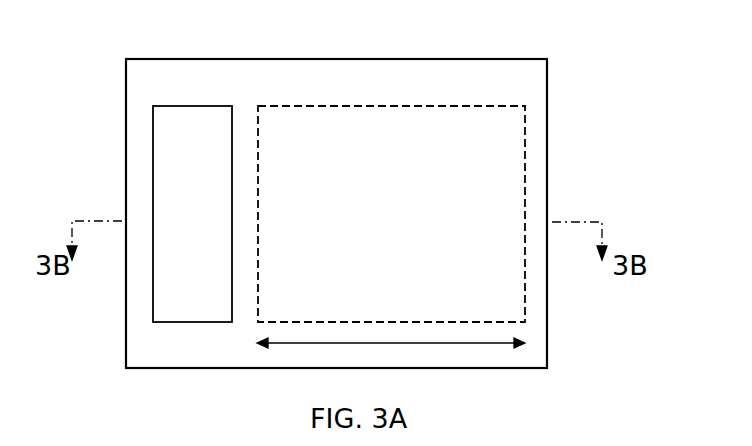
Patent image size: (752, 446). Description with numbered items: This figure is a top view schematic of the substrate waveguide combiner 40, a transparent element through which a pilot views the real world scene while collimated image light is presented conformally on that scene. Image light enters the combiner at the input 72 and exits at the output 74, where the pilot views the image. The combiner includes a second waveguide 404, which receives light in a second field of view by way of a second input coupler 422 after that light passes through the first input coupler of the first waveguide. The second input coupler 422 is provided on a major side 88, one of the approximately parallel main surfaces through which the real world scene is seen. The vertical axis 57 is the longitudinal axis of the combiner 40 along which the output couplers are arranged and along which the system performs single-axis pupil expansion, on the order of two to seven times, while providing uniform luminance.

The substrate waveguide combiner 40 is at (590, 83).
The major side 88 is at (258, 91).
The input 72 is at (163, 172).
The output 74 is at (368, 106).
The second waveguide 404 is at (512, 88).
The second input coupler 422 is at (193, 322).
The vertical axis 57 is at (458, 343).